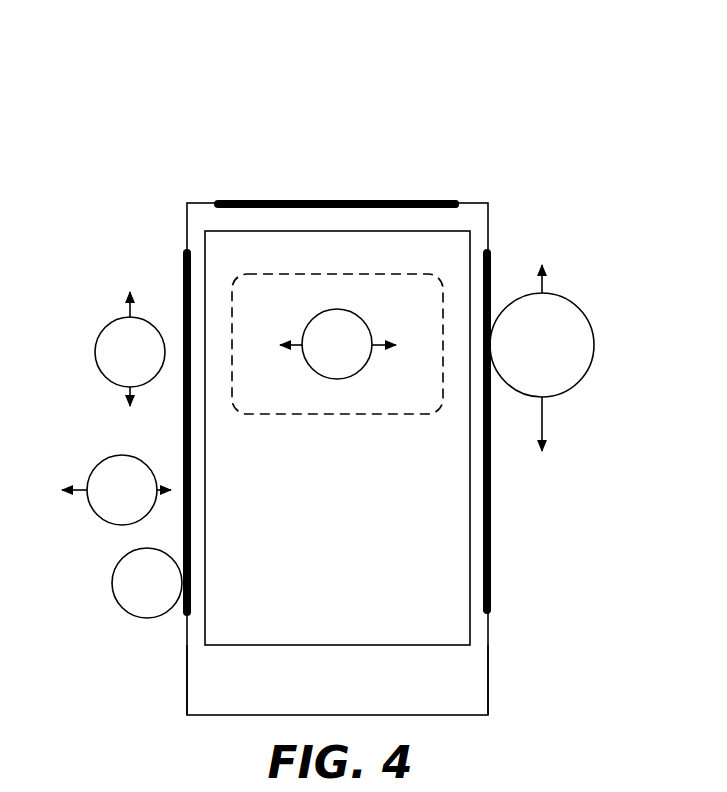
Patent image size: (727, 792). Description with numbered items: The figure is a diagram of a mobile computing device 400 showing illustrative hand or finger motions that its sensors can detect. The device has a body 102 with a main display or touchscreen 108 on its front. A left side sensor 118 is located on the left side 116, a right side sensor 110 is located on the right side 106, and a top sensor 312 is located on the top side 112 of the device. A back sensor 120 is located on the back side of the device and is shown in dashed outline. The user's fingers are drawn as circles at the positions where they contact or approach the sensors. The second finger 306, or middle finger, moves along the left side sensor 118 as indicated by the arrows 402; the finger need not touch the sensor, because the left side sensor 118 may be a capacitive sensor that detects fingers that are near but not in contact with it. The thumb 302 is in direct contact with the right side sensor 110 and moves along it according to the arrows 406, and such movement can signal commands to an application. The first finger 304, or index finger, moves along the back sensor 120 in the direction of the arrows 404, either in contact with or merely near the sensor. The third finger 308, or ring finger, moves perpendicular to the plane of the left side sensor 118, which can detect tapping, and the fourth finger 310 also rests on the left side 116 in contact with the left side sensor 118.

The mobile computing device 400 is at (102, 112).
The housing 102 is at (319, 691).
The right side 106 is at (491, 680).
The main display or touchscreen 108 is at (319, 572).
The right side sensor 110 is at (491, 550).
The top side 112 is at (198, 203).
The left side 116 is at (187, 697).
The left side sensor 118 is at (185, 277).
The back sensor 120 is at (288, 414).
The thumb 302 is at (524, 355).
The first finger 304 is at (319, 354).
The second finger 306 is at (112, 362).
The third finger 308 is at (104, 500).
The fourth finger 310 is at (129, 593).
The top sensor 312 is at (418, 200).
The arrows 402 is at (125, 388).
The arrows 404 is at (383, 345).
The arrows 406 is at (542, 413).